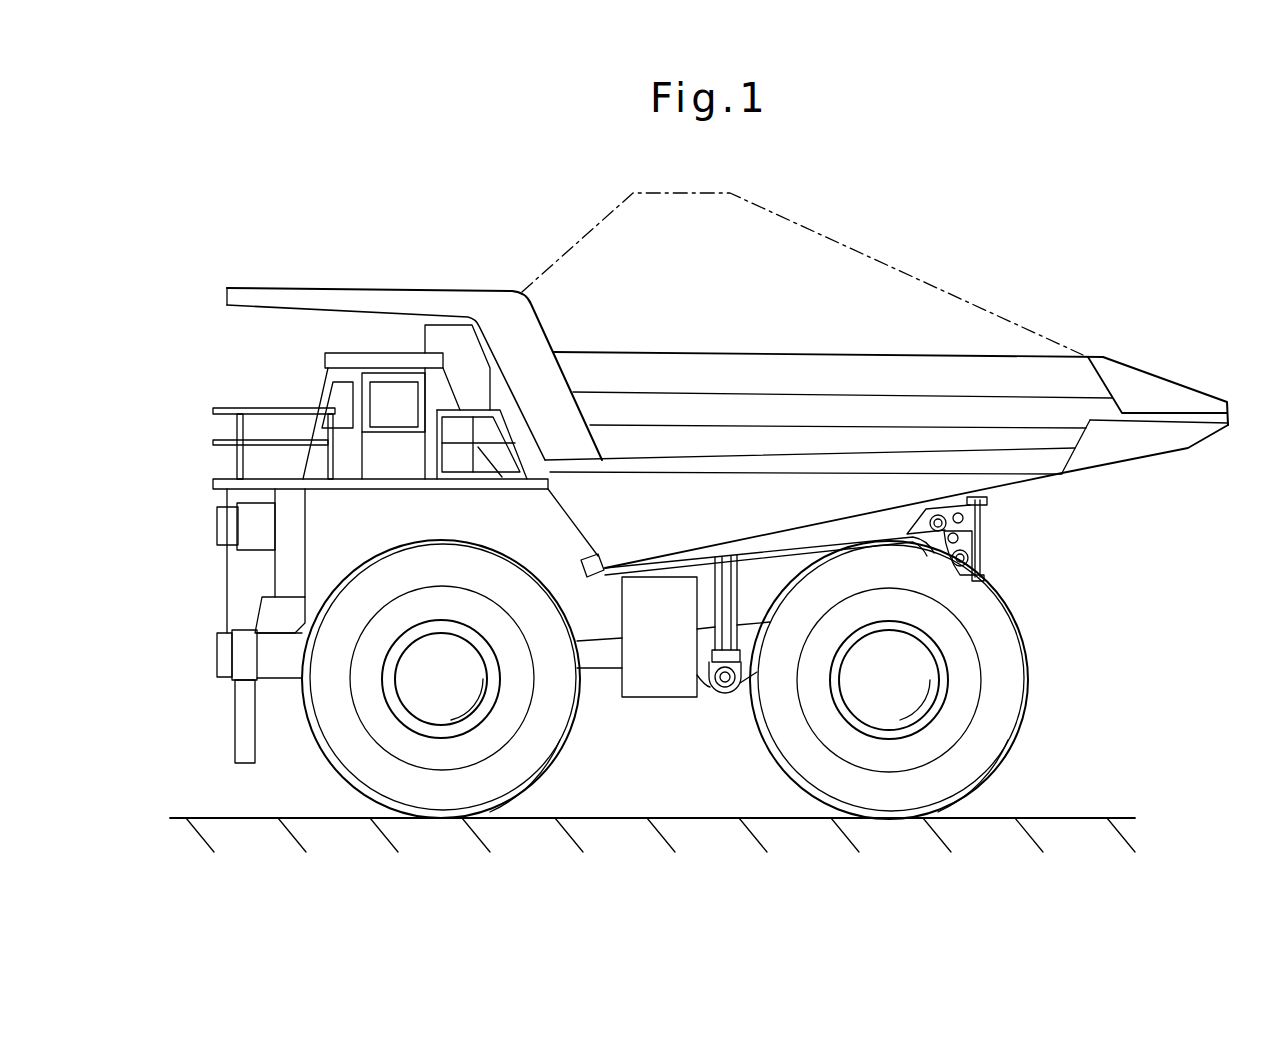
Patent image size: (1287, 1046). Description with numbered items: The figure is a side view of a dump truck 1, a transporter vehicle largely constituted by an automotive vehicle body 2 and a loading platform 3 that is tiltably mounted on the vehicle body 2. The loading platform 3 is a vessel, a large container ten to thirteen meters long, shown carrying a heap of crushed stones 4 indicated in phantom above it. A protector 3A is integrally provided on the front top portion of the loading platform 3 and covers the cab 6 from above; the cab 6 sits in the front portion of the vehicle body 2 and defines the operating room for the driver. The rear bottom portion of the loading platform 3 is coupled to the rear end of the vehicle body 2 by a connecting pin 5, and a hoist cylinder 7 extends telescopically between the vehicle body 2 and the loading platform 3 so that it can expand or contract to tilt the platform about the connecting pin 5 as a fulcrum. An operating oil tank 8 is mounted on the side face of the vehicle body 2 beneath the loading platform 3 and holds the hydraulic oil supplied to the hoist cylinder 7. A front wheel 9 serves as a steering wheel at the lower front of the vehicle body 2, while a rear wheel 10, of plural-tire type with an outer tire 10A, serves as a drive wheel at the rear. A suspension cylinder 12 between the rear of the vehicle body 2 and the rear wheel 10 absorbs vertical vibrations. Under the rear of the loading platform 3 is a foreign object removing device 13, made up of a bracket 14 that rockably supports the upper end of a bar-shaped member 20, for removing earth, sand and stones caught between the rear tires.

The dump truck 1 is at (510, 255).
The vehicle body 2 is at (598, 620).
The loading platform 3 is at (912, 365).
The protector 3A is at (348, 297).
The crushed stones 4 is at (790, 223).
The connecting pin 5 is at (963, 525).
The cab 6 is at (330, 373).
The hoist cylinder 7 is at (722, 632).
The operating oil tank 8 is at (660, 680).
The front wheel 9 is at (350, 750).
The rear wheel 10 is at (1015, 689).
The outer tire 10A is at (1003, 735).
The suspension cylinder 12 is at (968, 562).
The foreign object removing device 13 is at (990, 543).
The bracket 14 is at (978, 502).
The bar-shaped member 20 is at (978, 557).